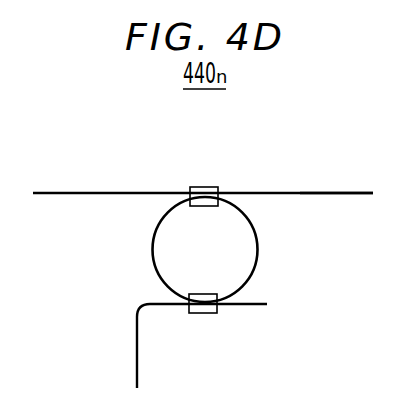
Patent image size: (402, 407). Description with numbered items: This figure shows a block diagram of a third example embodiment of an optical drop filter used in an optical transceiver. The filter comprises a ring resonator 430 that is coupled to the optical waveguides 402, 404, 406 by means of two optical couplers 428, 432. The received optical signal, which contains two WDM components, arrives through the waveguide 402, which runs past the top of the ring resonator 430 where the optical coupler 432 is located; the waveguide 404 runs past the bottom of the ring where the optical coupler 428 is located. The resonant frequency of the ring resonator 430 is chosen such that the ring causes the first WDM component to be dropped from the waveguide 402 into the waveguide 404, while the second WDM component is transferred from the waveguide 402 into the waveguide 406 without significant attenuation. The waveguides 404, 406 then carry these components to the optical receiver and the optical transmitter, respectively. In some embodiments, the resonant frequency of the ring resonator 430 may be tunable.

The optical waveguide 402 is at (88, 192).
The optical waveguide 404 is at (136, 355).
The optical waveguide 406 is at (325, 192).
The optical coupler 428 is at (200, 314).
The ring resonator 430 is at (292, 251).
The optical coupler 432 is at (206, 186).